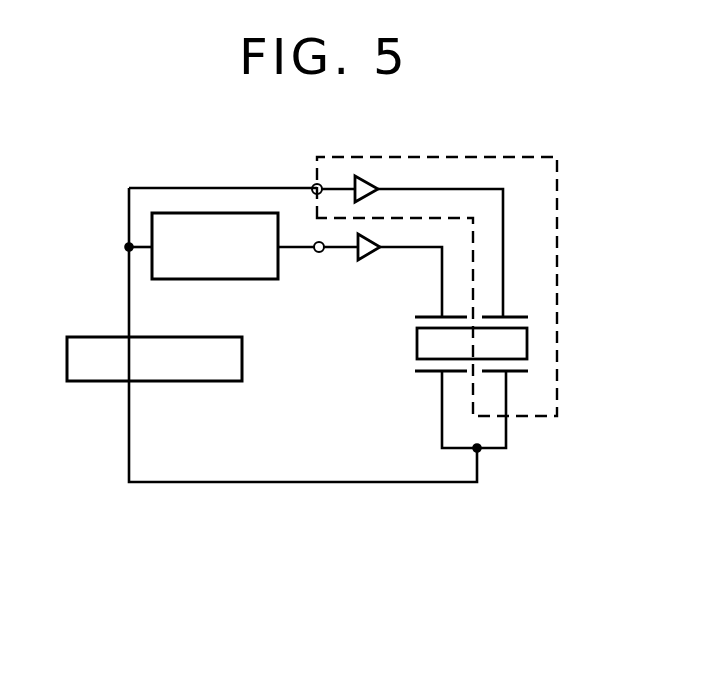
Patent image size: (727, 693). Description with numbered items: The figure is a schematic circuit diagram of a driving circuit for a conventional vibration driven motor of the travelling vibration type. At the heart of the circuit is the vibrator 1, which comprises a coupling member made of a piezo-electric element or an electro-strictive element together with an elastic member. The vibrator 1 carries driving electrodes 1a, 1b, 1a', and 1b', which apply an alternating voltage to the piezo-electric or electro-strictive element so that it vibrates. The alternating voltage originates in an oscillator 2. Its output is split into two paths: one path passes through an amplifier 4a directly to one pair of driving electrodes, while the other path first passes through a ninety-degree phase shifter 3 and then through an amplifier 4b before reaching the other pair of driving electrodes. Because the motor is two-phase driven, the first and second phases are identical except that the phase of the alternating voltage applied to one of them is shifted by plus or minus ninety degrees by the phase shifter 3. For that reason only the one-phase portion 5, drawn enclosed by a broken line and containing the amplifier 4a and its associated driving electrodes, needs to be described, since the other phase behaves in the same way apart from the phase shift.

The vibrator 1 is at (511, 366).
The driving electrode 1a is at (511, 302).
The driving electrode 1b is at (431, 302).
The driving electrode 1a' is at (514, 388).
The driving electrode 1b' is at (434, 388).
The oscillator 2 is at (93, 383).
The phase shifter 3 is at (275, 280).
The amplifier 4a is at (367, 182).
The amplifier 4b is at (367, 261).
The one-phase portion 5 is at (557, 222).